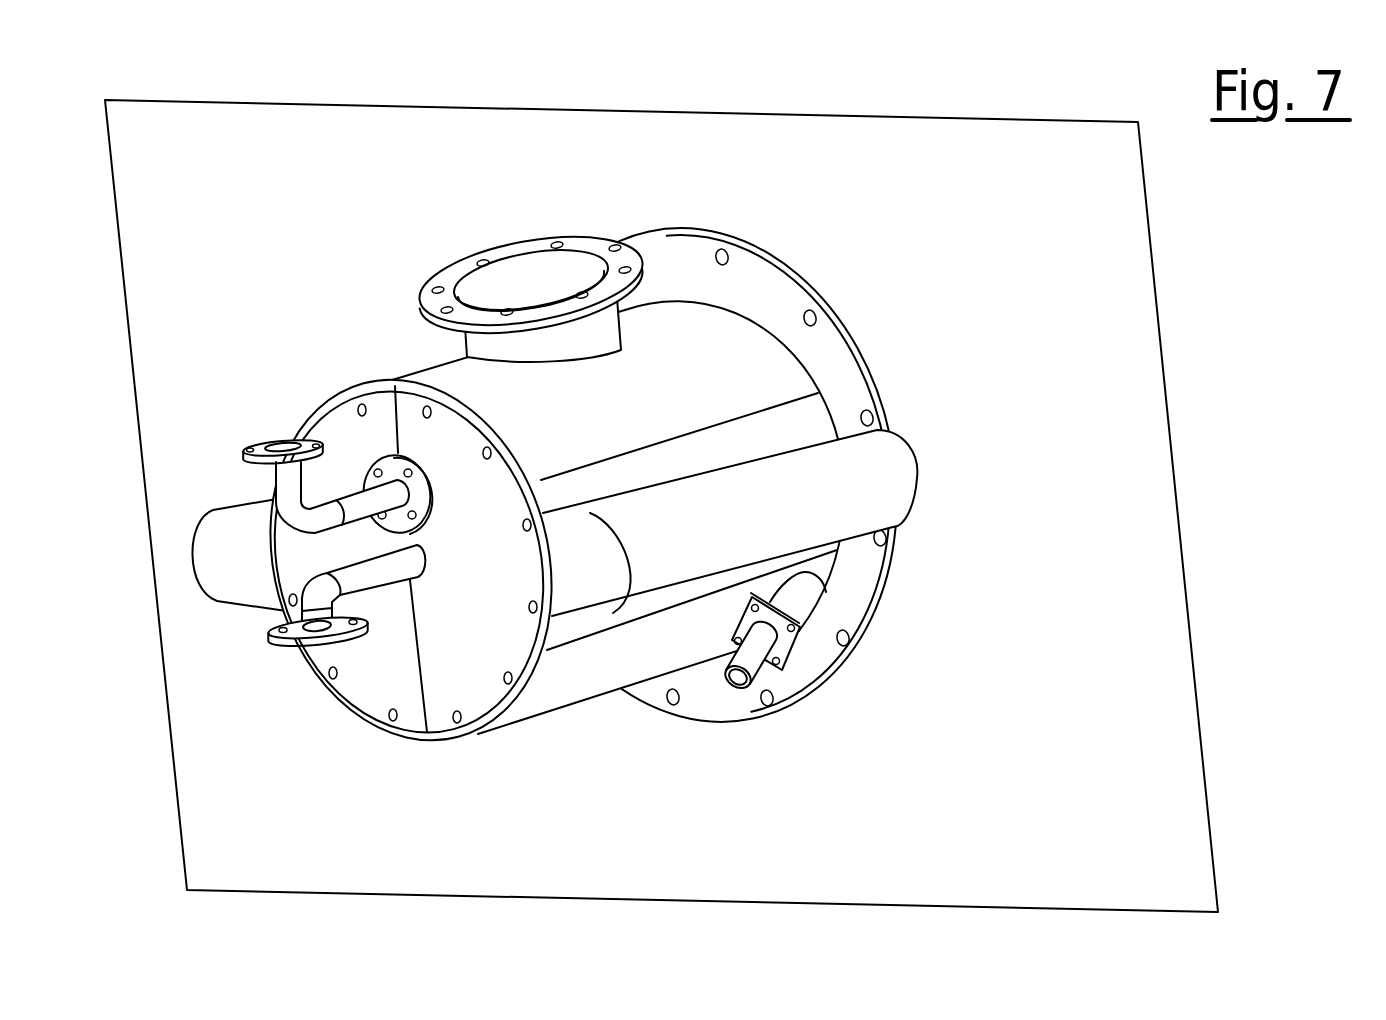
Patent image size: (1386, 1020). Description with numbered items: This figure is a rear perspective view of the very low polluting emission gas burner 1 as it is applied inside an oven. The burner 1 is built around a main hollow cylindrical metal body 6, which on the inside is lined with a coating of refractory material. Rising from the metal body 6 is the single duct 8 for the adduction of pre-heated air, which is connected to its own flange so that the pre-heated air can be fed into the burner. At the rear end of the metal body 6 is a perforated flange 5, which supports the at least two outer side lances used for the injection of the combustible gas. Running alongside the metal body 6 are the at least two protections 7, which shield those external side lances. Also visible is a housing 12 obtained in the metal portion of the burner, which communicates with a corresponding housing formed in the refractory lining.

The gas burner 1 is at (661, 474).
The perforated flange 5 is at (766, 297).
The main hollow cylindrical metal body 6 is at (592, 242).
The protection 7 is at (230, 577).
The duct for adduction of pre-heated air 8 is at (527, 343).
The housing in the metal portion 12 is at (748, 660).